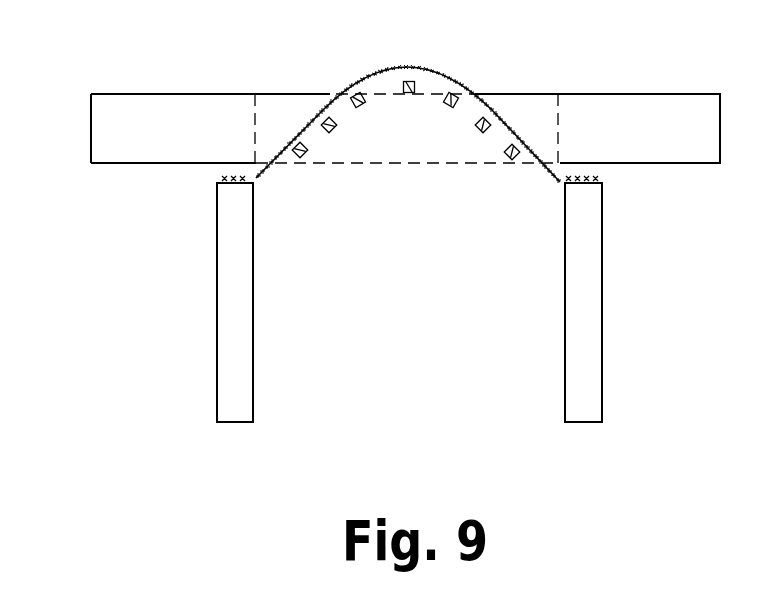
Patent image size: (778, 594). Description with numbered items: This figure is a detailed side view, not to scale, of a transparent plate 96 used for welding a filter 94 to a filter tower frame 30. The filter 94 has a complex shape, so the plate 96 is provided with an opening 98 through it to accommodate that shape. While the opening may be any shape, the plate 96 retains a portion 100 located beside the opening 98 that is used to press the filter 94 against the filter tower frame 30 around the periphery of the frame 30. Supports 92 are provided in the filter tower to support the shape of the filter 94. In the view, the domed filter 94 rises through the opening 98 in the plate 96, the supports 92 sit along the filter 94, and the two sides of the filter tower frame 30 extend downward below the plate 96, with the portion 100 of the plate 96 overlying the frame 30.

The filter tower frame 30 is at (590, 280).
The supports 92 is at (407, 94).
The filter 94 is at (458, 83).
The transparent plate 96 is at (188, 137).
The opening 98 is at (428, 168).
The portion 100 is at (597, 67).